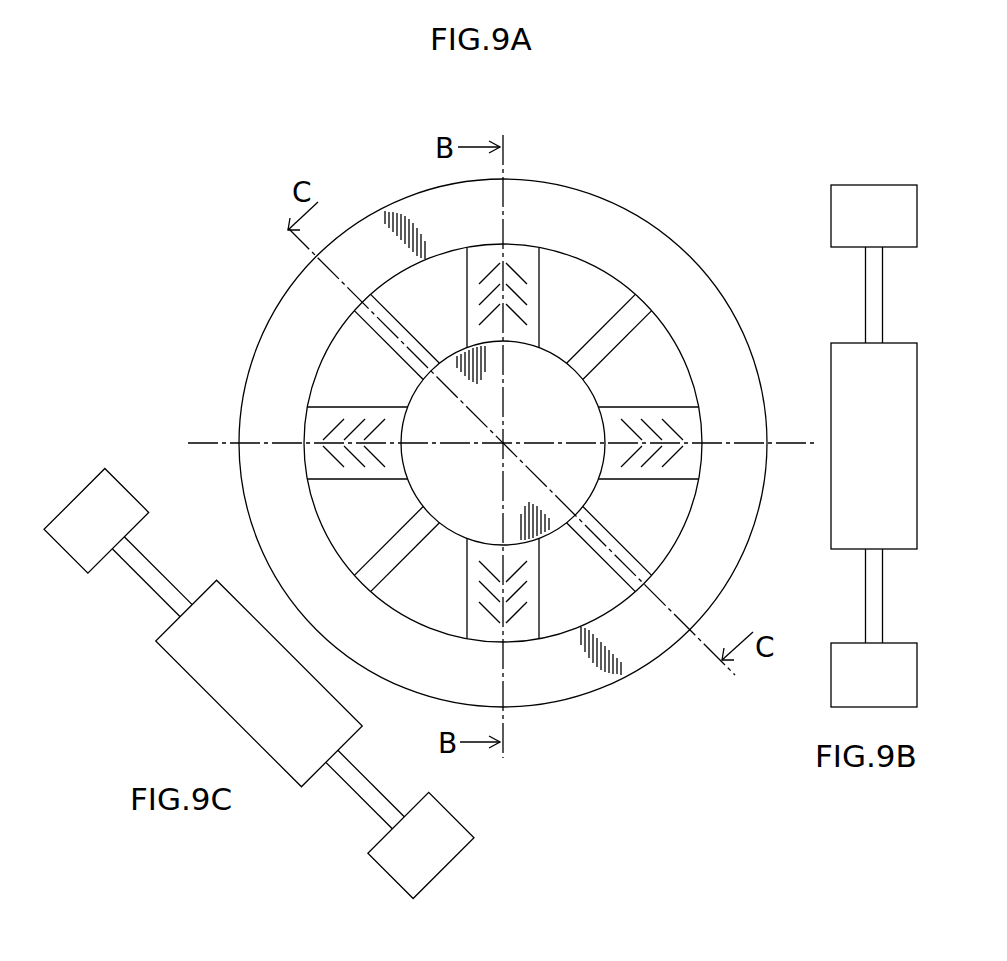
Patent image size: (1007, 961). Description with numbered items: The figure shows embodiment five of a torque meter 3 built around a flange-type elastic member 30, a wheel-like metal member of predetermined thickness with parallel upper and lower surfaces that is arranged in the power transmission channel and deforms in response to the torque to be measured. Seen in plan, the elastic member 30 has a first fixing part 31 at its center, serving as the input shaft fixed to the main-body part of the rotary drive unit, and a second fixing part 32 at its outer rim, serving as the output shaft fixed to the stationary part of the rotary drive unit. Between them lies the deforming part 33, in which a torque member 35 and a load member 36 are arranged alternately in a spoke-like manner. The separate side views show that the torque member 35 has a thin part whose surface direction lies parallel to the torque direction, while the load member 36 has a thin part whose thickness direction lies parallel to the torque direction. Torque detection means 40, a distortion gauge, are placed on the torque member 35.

In FIG. 9A, the torque meter 3 is at (673, 130).
In FIG. 9A, the elastic member 30 is at (518, 173).
In FIG. 9A, the first fixing part 31 is at (557, 397).
In FIG. 9A, the second fixing part 32 is at (578, 213).
In FIG. 9A, the deforming part 33 is at (575, 297).
In FIG. 9A, the torque member 35 is at (317, 427).
In FIG. 9B, the torque member 35 is at (876, 603).
In FIG. 9A, the load member 36 is at (389, 338).
In FIG. 9C, the load member 36 is at (380, 794).
In FIG. 9A, the torque detection means 40 is at (675, 428).